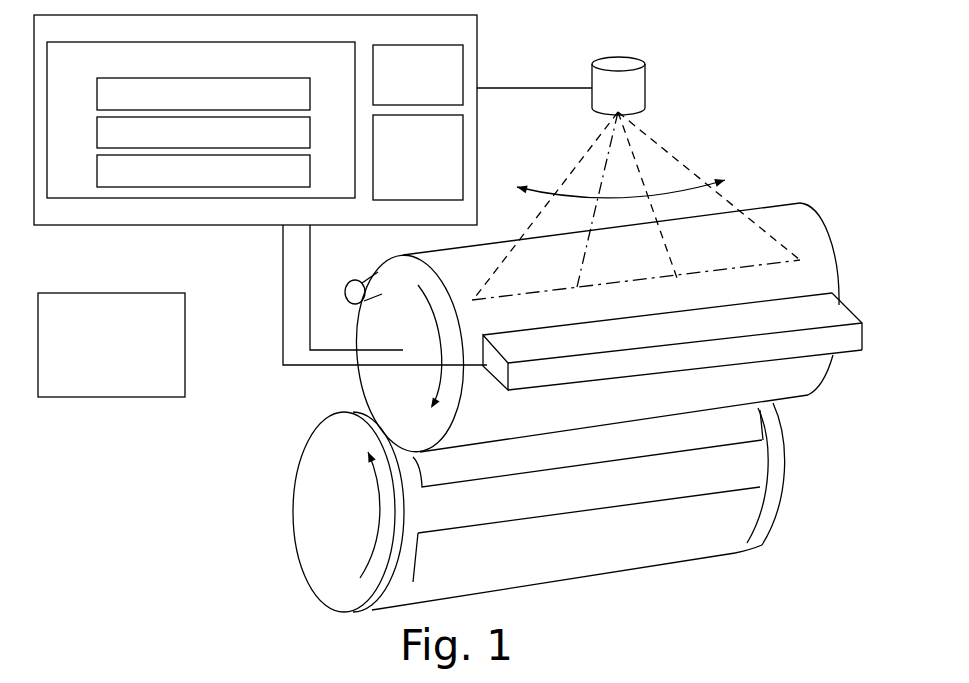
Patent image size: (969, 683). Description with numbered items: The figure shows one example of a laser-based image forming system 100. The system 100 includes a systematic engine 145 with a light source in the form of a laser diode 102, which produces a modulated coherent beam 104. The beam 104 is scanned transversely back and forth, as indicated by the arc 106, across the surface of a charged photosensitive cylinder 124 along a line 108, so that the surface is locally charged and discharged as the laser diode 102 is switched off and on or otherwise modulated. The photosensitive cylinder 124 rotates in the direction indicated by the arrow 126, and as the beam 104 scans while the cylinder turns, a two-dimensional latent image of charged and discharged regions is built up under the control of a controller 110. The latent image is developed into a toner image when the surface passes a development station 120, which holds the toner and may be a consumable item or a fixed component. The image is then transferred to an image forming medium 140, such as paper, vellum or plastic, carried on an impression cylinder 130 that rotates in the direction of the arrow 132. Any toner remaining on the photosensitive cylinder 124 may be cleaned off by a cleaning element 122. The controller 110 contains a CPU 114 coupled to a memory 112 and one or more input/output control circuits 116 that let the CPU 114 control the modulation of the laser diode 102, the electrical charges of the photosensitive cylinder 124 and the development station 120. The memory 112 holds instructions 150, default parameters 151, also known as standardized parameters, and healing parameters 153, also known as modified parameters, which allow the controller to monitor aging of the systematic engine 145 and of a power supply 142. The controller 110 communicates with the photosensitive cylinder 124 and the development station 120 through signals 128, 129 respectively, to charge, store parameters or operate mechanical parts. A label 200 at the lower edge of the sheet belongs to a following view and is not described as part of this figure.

The laser-based image forming system 100 is at (750, 75).
The controller 110 is at (478, 33).
The memory 112 is at (269, 73).
The instructions 150 is at (280, 103).
The default parameters 151 is at (260, 141).
The healing parameters 153 is at (261, 181).
The CPU 114 is at (400, 98).
The input/output control circuits 116 is at (400, 193).
The power supply 142 is at (111, 345).
The laser diode 102 is at (645, 84).
The modulated coherent beam 104 is at (662, 150).
The arc 106 is at (665, 193).
The line 108 is at (636, 257).
The systematic engine 145 is at (762, 132).
The photosensitive cylinder 124 is at (818, 215).
The arrow 126 is at (431, 395).
The signals 128 is at (312, 245).
The signals 129 is at (282, 305).
The cleaning element 122 is at (346, 292).
The development station 120 is at (787, 343).
The impression cylinder 130 is at (781, 457).
The image forming medium 140 is at (760, 547).
The arrow 132 is at (381, 530).
The system (fig 2) 200 is at (718, 682).